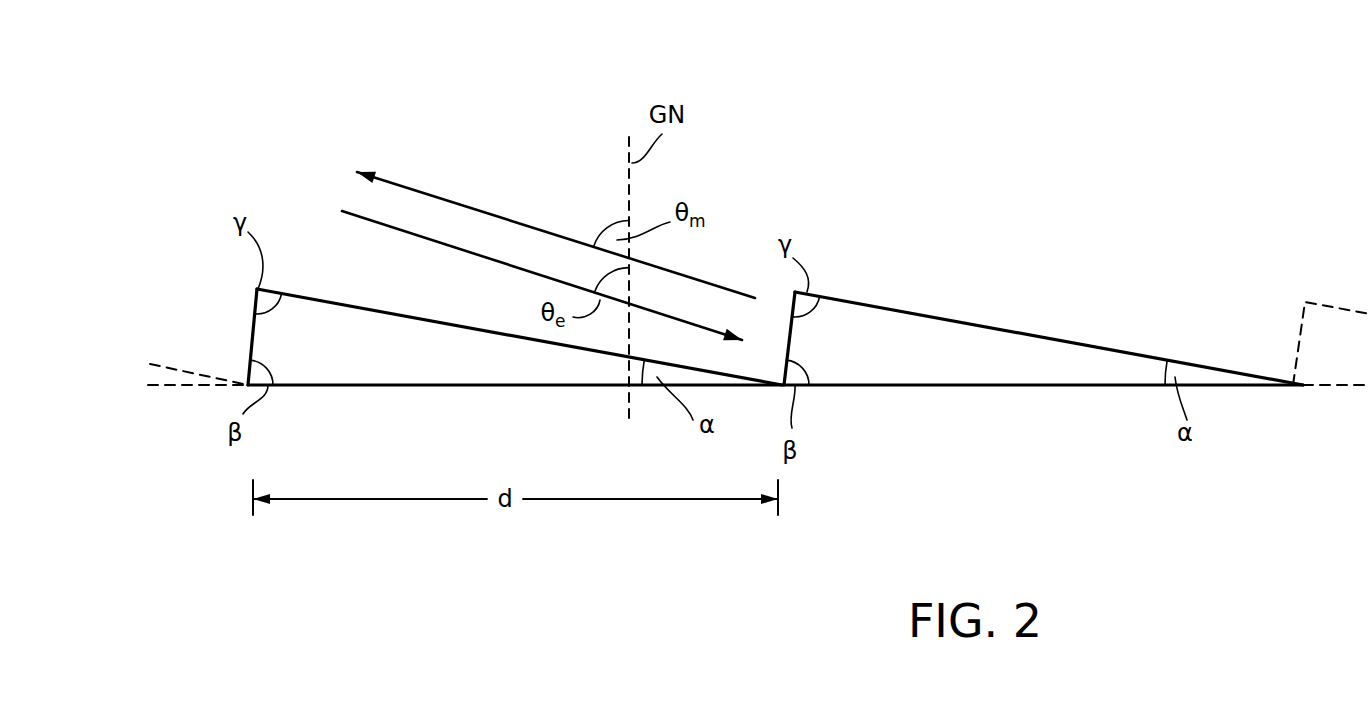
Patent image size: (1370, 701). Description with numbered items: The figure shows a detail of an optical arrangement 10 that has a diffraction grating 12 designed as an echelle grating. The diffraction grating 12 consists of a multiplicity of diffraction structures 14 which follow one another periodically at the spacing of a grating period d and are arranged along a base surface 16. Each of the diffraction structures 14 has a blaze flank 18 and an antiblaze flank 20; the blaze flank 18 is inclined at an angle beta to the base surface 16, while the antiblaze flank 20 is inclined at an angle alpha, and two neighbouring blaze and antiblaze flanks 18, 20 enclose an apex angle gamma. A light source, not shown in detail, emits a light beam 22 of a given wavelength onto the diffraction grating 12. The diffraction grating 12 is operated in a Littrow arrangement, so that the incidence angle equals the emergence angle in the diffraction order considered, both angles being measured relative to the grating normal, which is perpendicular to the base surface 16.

The optical arrangement 10 is at (790, 163).
The diffraction grating 12 is at (960, 267).
The diffraction structures 14 is at (1058, 330).
The base surface 16 is at (490, 387).
The blaze flank 18 is at (258, 330).
The antiblaze flank 20 is at (327, 298).
The light beam 22 is at (483, 256).